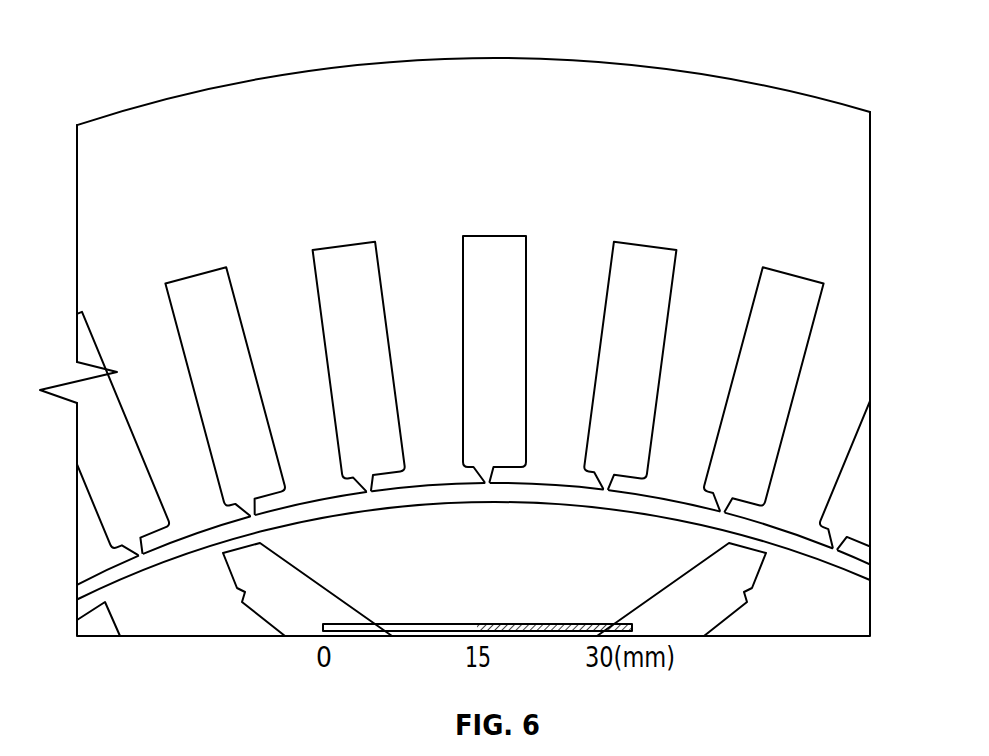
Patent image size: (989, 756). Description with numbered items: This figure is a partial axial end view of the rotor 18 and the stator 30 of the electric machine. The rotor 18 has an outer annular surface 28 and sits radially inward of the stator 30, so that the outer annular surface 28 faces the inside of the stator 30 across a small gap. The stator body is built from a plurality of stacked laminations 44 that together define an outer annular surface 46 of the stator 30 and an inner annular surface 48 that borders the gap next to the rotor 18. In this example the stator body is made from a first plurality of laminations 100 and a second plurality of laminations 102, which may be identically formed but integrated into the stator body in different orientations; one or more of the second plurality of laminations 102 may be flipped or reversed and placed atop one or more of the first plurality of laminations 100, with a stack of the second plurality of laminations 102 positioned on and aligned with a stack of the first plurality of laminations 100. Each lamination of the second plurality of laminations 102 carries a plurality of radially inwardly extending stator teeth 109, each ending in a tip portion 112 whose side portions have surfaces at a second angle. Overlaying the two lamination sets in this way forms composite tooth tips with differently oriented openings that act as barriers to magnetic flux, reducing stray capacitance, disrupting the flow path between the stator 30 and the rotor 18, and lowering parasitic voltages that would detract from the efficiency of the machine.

The rotor 18 is at (421, 589).
The outer annular surface 28 is at (473, 550).
The stator 30 is at (496, 374).
The stacked laminations 44 is at (494, 411).
The outer annular surface 46 is at (473, 87).
The inner annular surface 48 is at (359, 366).
The first plurality of laminations 100 is at (469, 589).
The second plurality of laminations 102 is at (494, 359).
The stator teeth 109 is at (630, 365).
The tip portion 112 is at (523, 513).